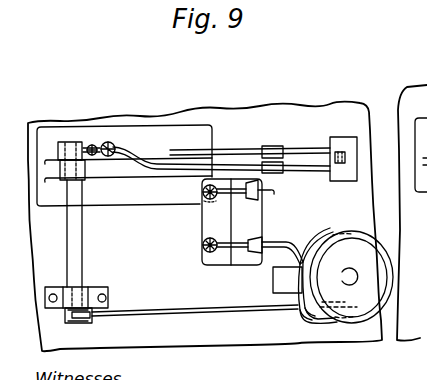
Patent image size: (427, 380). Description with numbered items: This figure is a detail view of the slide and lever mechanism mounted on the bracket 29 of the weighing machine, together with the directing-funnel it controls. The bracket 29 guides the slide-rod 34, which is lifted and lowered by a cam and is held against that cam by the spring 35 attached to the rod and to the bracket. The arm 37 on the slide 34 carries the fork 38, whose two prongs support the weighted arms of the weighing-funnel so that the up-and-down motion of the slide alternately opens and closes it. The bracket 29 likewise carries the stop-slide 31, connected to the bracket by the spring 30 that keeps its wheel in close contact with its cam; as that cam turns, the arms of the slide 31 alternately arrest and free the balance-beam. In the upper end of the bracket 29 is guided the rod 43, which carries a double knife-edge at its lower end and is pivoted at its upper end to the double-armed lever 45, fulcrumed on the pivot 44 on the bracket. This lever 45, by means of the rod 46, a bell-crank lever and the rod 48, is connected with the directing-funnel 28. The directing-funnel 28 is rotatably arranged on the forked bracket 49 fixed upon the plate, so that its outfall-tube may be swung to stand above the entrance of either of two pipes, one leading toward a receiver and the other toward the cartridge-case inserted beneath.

The directing-funnel 28 is at (373, 263).
The bracket 29 is at (210, 130).
The spring 30 is at (203, 191).
The stop-slide 31 is at (279, 194).
The slide-rod 34 is at (254, 239).
The spring 35 is at (204, 246).
The arm 37 is at (276, 245).
The fork 38 is at (313, 264).
The rod 43 is at (347, 181).
The pivot 44 is at (278, 142).
The double-armed lever 45 is at (152, 161).
The rod 46 is at (103, 143).
The rod 48 is at (155, 313).
The forked bracket 49 is at (303, 316).